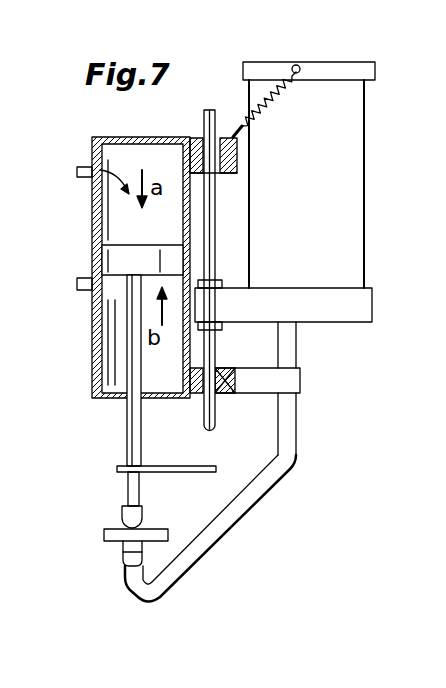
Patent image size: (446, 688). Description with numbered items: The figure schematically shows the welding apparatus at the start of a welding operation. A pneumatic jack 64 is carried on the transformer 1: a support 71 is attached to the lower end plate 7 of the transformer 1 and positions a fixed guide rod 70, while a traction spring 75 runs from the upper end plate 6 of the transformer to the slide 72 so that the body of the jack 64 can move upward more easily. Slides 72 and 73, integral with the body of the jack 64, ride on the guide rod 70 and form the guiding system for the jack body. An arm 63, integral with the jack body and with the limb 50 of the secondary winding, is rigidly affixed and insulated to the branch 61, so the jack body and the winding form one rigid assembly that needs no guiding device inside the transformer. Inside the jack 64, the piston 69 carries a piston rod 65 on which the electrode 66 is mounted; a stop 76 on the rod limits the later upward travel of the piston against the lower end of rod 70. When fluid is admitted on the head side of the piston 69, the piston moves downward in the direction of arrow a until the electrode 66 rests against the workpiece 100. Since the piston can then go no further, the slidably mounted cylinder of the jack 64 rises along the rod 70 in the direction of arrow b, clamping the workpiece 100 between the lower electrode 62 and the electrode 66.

The transformer 1 is at (367, 128).
The top bar 6 is at (329, 62).
The end plate 7 is at (345, 301).
The limb 50 is at (297, 344).
The branch 61 is at (230, 517).
The electrode 62 is at (122, 548).
The arm 63 is at (300, 381).
The pneumatic jack 64 is at (106, 400).
The piston rod 65 is at (132, 422).
The electrode 66 is at (141, 517).
The piston 69 is at (150, 262).
The guide rod 70 is at (215, 220).
The support 71 is at (230, 293).
The slide 72 is at (238, 150).
The slide 73 is at (233, 380).
The traction spring 75 is at (248, 100).
The stop 76 is at (202, 464).
The workpiece 100 is at (105, 528).